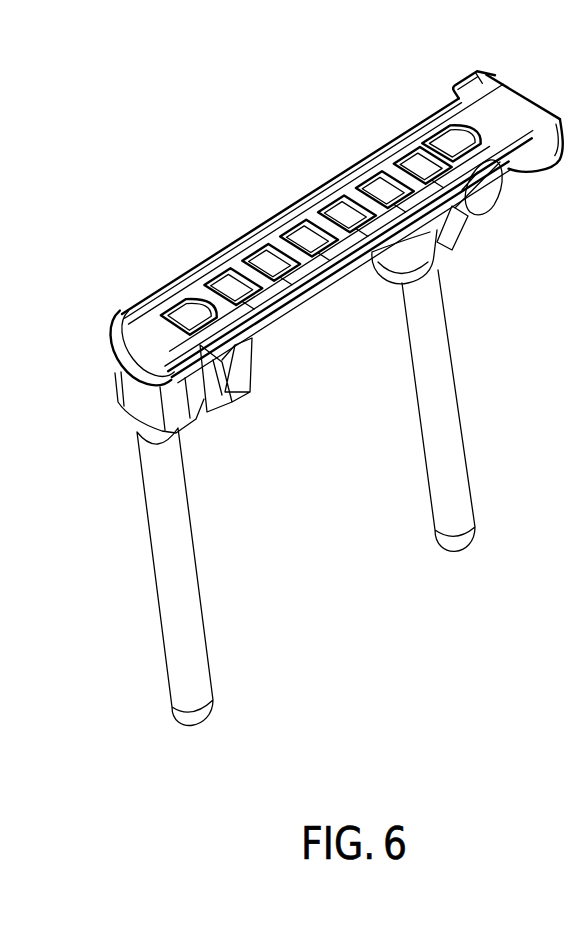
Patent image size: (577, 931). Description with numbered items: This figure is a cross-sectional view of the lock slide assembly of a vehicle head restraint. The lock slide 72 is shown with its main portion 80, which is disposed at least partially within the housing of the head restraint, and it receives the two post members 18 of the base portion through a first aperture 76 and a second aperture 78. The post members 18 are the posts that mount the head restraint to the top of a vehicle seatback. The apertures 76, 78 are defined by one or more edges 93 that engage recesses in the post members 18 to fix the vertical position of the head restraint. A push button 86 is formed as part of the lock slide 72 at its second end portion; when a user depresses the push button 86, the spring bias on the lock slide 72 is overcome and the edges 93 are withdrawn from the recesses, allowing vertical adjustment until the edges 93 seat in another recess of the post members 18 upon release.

The post members 18 is at (190, 611).
The lock slide 72 is at (265, 203).
The first aperture 76 is at (194, 294).
The second aperture 78 is at (453, 100).
The main portion 80 is at (317, 297).
The push button 86 is at (513, 97).
The edges 93 is at (140, 313).